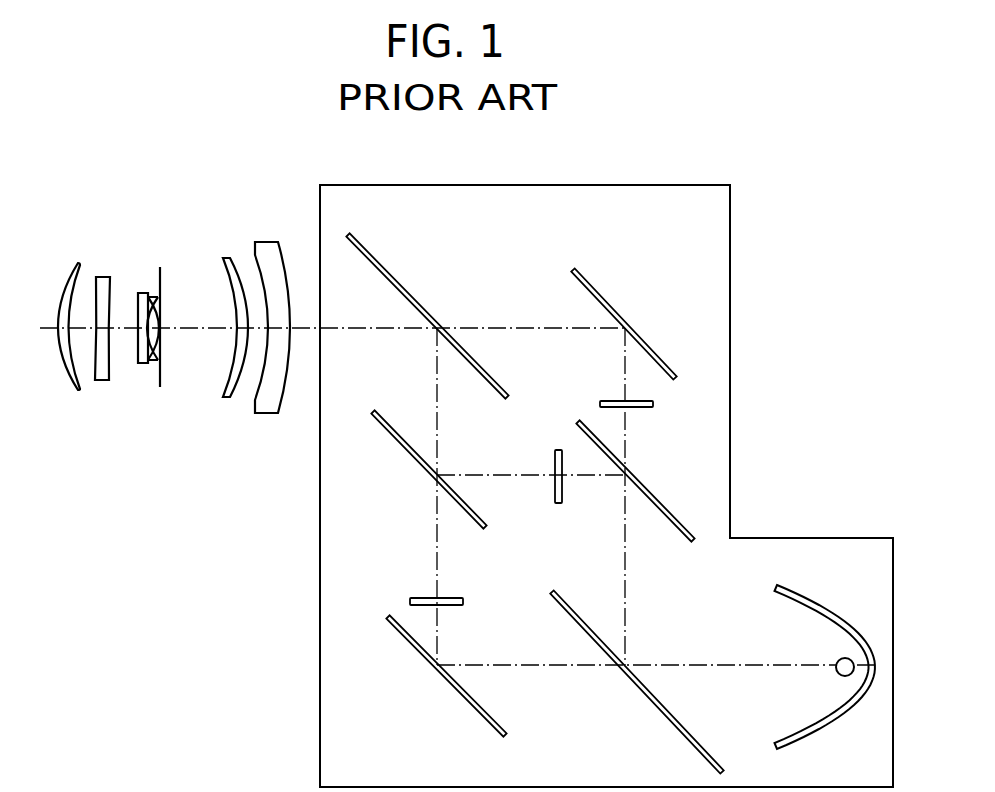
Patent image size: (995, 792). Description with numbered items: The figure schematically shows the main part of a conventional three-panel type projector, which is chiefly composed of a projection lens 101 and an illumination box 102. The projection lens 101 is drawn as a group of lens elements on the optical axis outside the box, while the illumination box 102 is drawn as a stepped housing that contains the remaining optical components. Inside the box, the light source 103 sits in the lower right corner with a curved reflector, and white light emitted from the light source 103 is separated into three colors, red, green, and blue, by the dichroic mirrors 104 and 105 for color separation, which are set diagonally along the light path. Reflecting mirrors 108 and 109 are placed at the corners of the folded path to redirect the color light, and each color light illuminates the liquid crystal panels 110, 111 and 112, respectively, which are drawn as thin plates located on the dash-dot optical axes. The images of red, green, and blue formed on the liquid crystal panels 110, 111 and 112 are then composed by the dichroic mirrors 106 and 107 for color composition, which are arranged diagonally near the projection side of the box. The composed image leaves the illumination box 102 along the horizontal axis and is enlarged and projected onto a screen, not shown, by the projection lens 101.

The projection lens 101 is at (292, 233).
The illumination box 102 is at (605, 185).
The light source 103 is at (838, 605).
The dichroic mirror 104 is at (692, 731).
The dichroic mirror 105 is at (668, 508).
The dichroic mirror 106 is at (393, 438).
The dichroic mirror 107 is at (367, 250).
The reflecting mirror 108 is at (487, 723).
The reflecting mirror 109 is at (660, 357).
The liquid crystal panel 110 is at (653, 401).
The liquid crystal panel 111 is at (553, 495).
The liquid crystal panel 112 is at (417, 597).